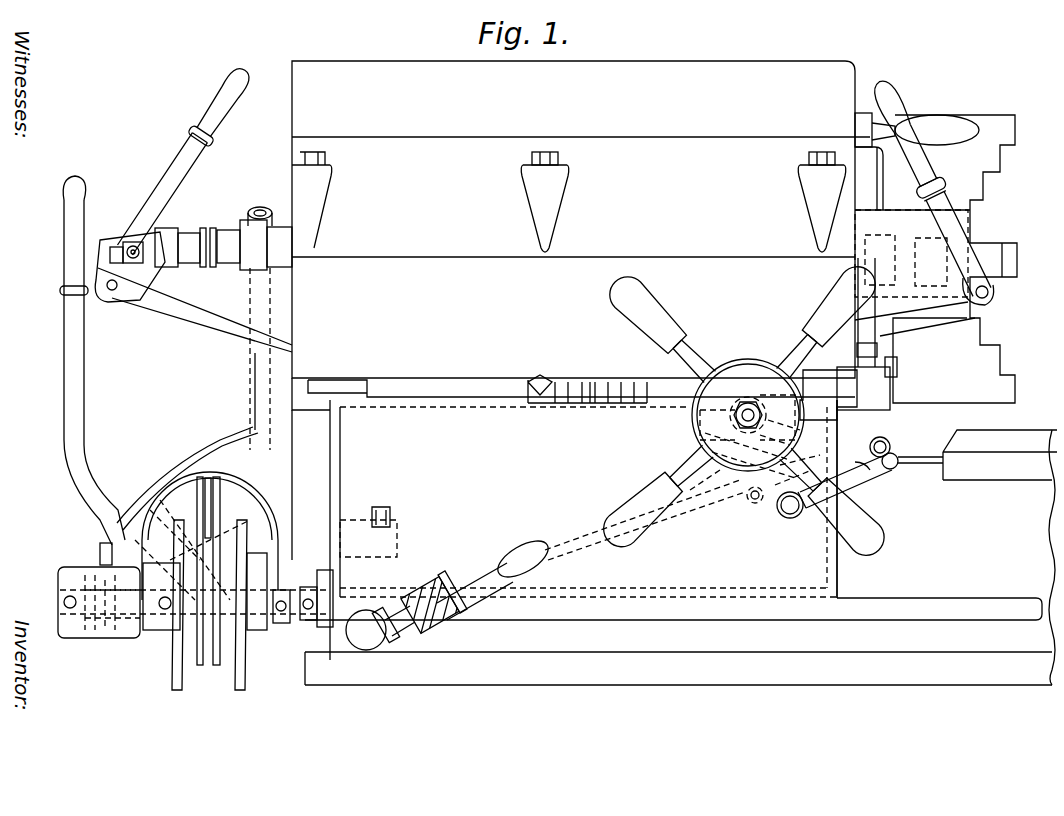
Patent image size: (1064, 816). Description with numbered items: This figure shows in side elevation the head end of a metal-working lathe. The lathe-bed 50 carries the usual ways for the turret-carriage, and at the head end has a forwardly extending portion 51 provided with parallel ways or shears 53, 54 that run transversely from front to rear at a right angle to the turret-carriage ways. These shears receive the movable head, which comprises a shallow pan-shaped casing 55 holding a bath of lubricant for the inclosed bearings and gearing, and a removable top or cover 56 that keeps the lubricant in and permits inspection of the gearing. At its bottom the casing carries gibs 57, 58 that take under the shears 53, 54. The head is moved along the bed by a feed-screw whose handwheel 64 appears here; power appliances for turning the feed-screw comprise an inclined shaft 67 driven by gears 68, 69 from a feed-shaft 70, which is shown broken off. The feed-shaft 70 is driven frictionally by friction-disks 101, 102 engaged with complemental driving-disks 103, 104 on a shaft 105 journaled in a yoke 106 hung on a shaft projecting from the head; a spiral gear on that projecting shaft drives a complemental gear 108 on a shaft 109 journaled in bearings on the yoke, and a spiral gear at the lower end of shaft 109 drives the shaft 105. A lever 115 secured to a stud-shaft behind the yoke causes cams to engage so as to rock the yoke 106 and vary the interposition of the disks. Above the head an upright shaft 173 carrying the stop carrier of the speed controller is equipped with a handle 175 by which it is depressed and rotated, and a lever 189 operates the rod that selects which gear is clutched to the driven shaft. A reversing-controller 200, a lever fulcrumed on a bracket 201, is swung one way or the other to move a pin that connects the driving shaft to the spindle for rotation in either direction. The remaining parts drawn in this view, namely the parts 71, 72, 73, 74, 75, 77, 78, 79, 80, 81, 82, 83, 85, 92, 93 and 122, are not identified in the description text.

The lathe-bed 50 is at (974, 400).
The forwardly extending portion 51 is at (820, 578).
The way or shear 53 is at (355, 388).
The way or shear 54 is at (828, 389).
The pan-shaped casing 55 is at (631, 257).
The top or cover 56 is at (710, 75).
The gib 57 is at (300, 380).
The gib 58 is at (885, 412).
The handwheel 64 is at (745, 362).
The inclined shaft 67 is at (476, 575).
The gear 68 is at (420, 585).
The gear 69 is at (420, 630).
The feed-shaft 70 is at (922, 614).
The base 71 is at (300, 635).
The link 72 is at (735, 485).
The pin 73 is at (867, 439).
The rod 74 is at (840, 495).
The ball joint 75 is at (901, 449).
The block 77 is at (977, 455).
The knob 78 is at (368, 645).
The roller 79 is at (790, 518).
The link 80 is at (852, 475).
The pin 81 is at (752, 505).
The slots 82 is at (566, 405).
The slide 83 is at (588, 405).
The stop 85 is at (537, 390).
The tab 92 is at (897, 369).
The nut 93 is at (888, 331).
The friction-disk 101 is at (180, 675).
The friction-disk 102 is at (237, 675).
The driving-disk 103 is at (148, 505).
The driving-disk 104 is at (238, 495).
The shaft 105 is at (300, 560).
The yoke 106 is at (178, 458).
The complemental gear 108 is at (248, 222).
The shaft 109 is at (250, 414).
The lever 115 is at (78, 366).
The clamp 122 is at (292, 248).
The upright shaft 173 is at (860, 113).
The handle 175 is at (945, 128).
The lever 189 is at (930, 190).
The reversing-controller 200 is at (195, 158).
The bracket 201 is at (176, 310).